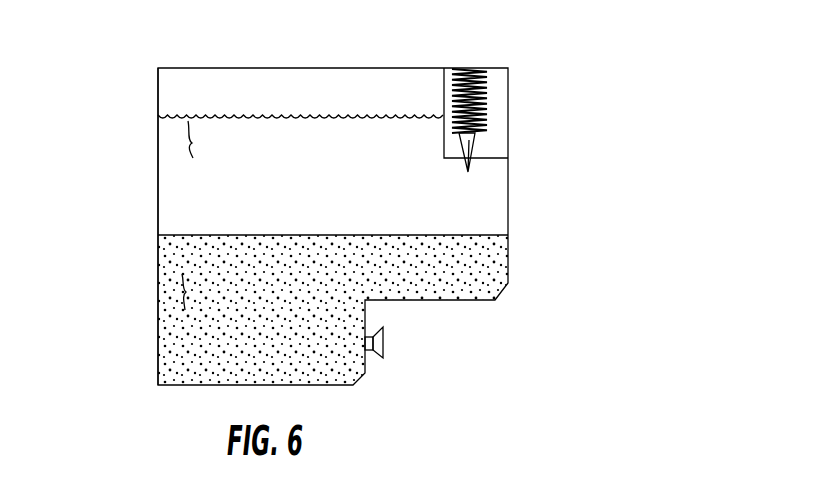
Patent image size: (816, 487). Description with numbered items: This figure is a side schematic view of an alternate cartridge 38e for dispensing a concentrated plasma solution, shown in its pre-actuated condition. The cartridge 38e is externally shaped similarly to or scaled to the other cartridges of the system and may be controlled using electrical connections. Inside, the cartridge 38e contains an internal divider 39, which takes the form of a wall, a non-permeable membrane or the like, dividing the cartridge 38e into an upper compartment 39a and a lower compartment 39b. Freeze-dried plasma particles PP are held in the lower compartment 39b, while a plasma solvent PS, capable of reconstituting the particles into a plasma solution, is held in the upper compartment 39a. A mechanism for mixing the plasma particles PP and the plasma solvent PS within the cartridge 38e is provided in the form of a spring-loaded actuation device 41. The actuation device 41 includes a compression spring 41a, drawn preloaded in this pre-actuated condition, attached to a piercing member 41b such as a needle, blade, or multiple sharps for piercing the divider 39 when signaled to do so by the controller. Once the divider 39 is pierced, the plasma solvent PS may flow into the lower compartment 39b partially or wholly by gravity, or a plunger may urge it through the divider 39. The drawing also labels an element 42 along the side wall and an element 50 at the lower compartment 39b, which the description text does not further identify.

The cartridge 38e is at (575, 172).
The reservoir wall 42 is at (158, 181).
The internal divider 39 is at (163, 236).
The upper compartment 39a is at (188, 143).
The lower compartment 39b is at (183, 292).
The plasma solvent PS is at (302, 128).
The plasma particles PP is at (290, 365).
The actuation device 41 is at (500, 116).
The compression spring 41a is at (485, 92).
The piercing member 41b is at (472, 140).
The ink outlet 50 is at (383, 342).